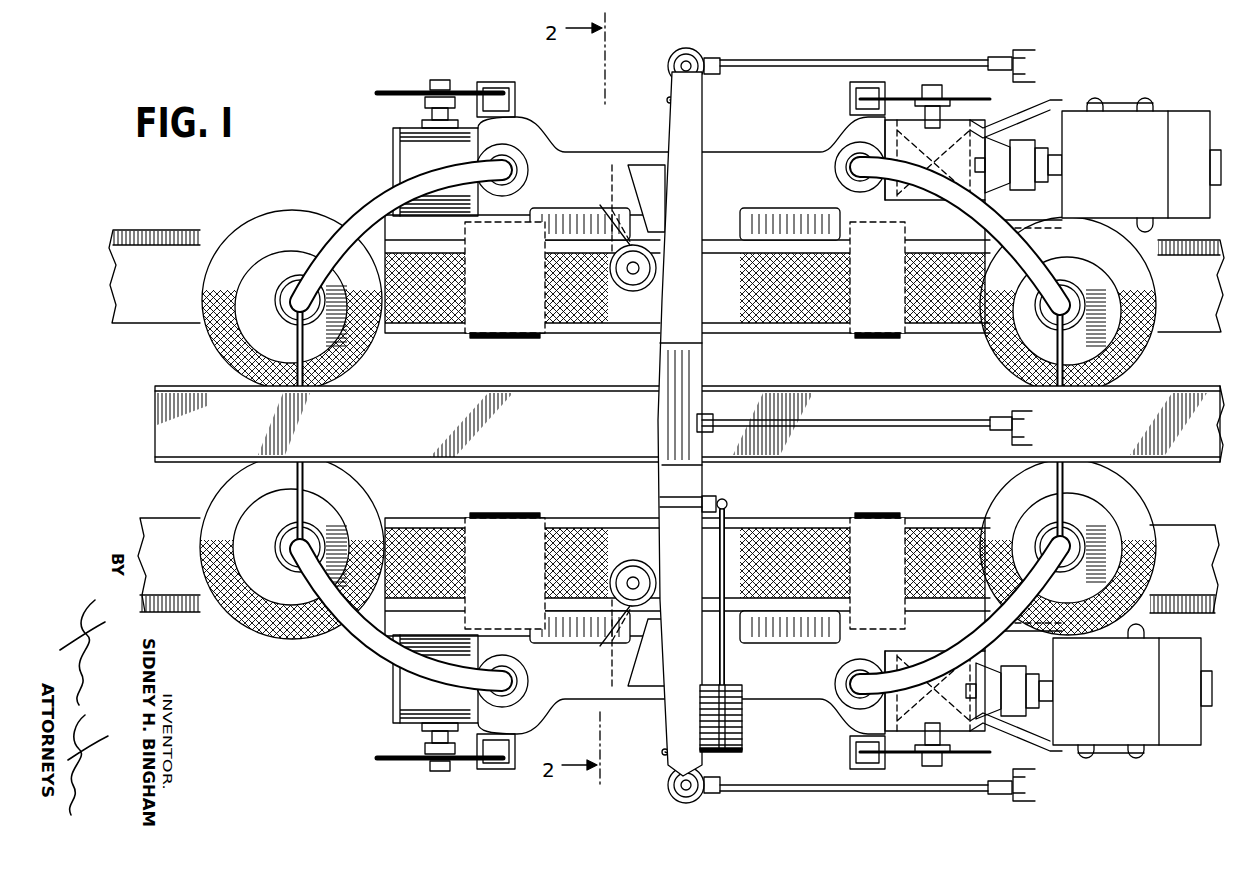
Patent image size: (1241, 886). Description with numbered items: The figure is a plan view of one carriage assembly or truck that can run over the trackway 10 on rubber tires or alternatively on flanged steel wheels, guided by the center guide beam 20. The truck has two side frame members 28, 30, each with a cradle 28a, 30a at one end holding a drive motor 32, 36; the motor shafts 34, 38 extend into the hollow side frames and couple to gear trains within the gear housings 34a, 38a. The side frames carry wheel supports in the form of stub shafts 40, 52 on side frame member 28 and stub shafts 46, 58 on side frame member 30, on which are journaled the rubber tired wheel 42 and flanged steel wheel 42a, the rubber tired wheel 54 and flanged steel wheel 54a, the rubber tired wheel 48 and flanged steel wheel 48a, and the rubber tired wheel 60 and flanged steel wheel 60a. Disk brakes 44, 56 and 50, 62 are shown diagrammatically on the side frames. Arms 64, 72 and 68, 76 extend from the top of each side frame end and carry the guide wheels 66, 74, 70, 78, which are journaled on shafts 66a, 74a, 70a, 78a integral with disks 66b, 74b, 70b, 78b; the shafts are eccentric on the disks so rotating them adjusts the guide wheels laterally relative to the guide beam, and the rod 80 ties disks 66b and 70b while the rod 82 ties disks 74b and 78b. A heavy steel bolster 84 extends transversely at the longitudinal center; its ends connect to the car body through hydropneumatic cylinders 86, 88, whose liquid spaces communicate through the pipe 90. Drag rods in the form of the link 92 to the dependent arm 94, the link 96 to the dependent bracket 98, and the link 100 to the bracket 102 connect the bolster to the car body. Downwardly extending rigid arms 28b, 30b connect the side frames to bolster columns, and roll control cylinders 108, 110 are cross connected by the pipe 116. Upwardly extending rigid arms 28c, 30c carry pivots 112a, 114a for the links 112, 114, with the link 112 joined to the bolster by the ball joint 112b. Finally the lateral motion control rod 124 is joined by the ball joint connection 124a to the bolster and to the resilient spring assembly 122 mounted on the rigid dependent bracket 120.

The trackway 10 is at (92, 265).
The guide beam 20 is at (895, 452).
The side frame member 28 is at (752, 162).
The cradle 28a is at (1054, 104).
The rigid arm 28b is at (614, 228).
The rigid arm 28c is at (642, 180).
The side frame member 30 is at (795, 698).
The cradle 30a is at (1130, 642).
The rigid arm 30b is at (612, 642).
The rigid arm 30c is at (648, 684).
The drive motor 32 is at (1134, 173).
The motor shaft 34 is at (1026, 150).
The gear housing 34a is at (966, 175).
The drive motor 36 is at (1120, 705).
The motor shaft 38 is at (1015, 712).
The gear housing 38a is at (958, 705).
The stub shaft 40 is at (868, 336).
The rubber tired wheel 42 is at (792, 333).
The flanged steel wheel 42a is at (812, 228).
The disk brake 44 is at (960, 96).
The stub shaft 46 is at (852, 520).
The rubber tired wheel 48 is at (796, 526).
The flanged steel wheel 48a is at (772, 632).
The disk brake 50 is at (948, 762).
The stub shaft 52 is at (488, 346).
The rubber tired wheel 54 is at (582, 333).
The flanged steel wheel 54a is at (543, 214).
The disk brake 56 is at (405, 92).
The stub shaft 58 is at (486, 522).
The rubber tired wheel 60 is at (414, 520).
The flanged steel wheel 60a is at (546, 632).
The disk brake 62 is at (398, 762).
The arm 64 is at (1050, 278).
The guide wheel 66 is at (1140, 370).
The shaft 66a is at (1072, 302).
The disk 66b is at (1042, 296).
The arm 68 is at (985, 642).
The guide wheel 70 is at (1130, 500).
The shaft 70a is at (1068, 538).
The disk 70b is at (1048, 542).
The arm 72 is at (372, 204).
The guide wheel 74 is at (298, 222).
The shaft 74a is at (290, 302).
The disk 74b is at (298, 290).
The arm 76 is at (370, 652).
The guide wheel 78 is at (272, 640).
The shaft 78a is at (290, 548).
The disk 78b is at (308, 546).
The rod 80 is at (1065, 430).
The rod 82 is at (303, 433).
The bolster 84 is at (697, 365).
The cylinder 86 is at (698, 52).
The cylinder 88 is at (668, 792).
The pipe 90 is at (664, 100).
The link 92 is at (822, 60).
The arm 94 is at (1032, 54).
The link 96 is at (774, 792).
The bracket 98 is at (1022, 806).
The link 100 is at (874, 428).
The bracket 102 is at (1000, 420).
The cylinder 108 is at (624, 305).
The cylinder 110 is at (630, 562).
The link 112 is at (680, 240).
The pivotal connection 112a is at (680, 218).
The ball joint 112b is at (686, 296).
The link 114 is at (683, 598).
The pivotal connection 114a is at (682, 633).
The pipe 116 is at (658, 428).
The bracket 120 is at (744, 692).
The spring assembly 122 is at (738, 752).
The rod 124 is at (733, 536).
The ball joint connection 124a is at (728, 504).